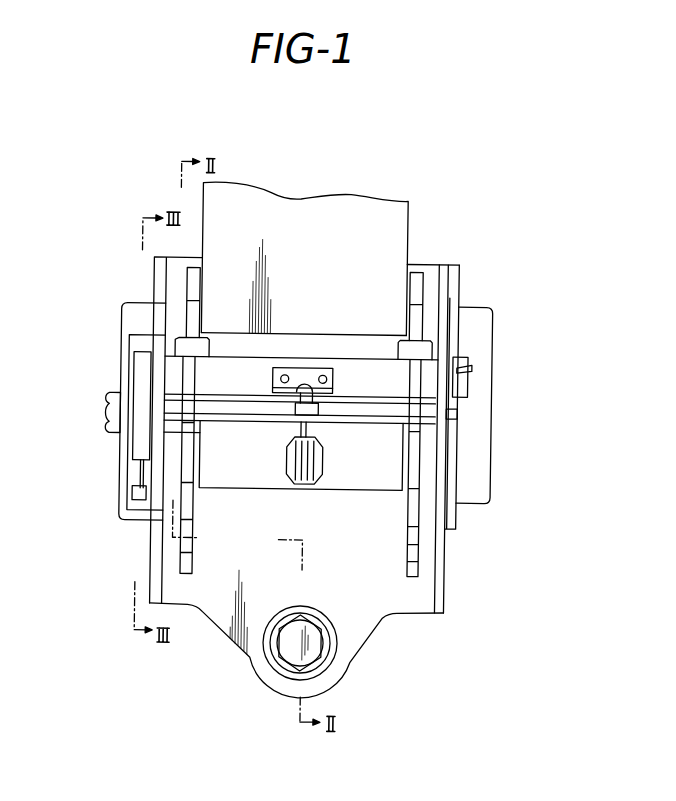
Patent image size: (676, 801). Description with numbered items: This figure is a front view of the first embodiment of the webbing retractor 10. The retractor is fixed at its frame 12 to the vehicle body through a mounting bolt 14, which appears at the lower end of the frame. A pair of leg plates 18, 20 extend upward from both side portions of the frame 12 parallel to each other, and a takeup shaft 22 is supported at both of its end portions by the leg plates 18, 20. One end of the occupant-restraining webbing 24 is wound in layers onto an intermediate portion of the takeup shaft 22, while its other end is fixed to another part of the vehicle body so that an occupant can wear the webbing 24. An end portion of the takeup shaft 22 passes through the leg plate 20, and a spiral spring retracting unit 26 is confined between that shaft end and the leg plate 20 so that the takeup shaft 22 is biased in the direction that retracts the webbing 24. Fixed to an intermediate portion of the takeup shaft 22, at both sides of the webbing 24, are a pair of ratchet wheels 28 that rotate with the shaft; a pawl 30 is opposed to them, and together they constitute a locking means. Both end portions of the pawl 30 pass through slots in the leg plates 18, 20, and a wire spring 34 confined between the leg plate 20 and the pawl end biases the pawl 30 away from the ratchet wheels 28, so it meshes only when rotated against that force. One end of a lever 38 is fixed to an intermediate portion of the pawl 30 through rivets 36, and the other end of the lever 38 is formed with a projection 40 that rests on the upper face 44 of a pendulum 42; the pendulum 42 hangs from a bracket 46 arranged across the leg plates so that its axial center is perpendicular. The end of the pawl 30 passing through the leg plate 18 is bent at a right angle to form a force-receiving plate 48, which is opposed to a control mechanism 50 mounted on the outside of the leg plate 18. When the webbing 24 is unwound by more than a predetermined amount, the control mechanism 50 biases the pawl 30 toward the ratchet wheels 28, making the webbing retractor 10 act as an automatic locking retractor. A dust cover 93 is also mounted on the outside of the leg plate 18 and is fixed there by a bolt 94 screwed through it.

The webbing retractor 10 is at (462, 261).
The frame 12 is at (351, 644).
The mounting bolt 14 is at (316, 628).
The leg plate 18 is at (155, 565).
The leg plate 20 is at (448, 485).
The takeup shaft 22 is at (430, 438).
The occupant-restraining webbing 24 is at (397, 219).
The spiral spring retracting unit 26 is at (488, 364).
The ratchet wheels 28 is at (198, 274).
The pawl 30 is at (342, 364).
The wire spring 34 is at (461, 350).
The rivets 36 is at (279, 378).
The lever 38 is at (294, 372).
The projection 40 is at (315, 407).
The pendulum 42 is at (285, 463).
The upper face 44 is at (294, 405).
The bracket 46 is at (218, 421).
The force-receiving plate 48 is at (136, 365).
The control mechanism 50 is at (103, 388).
The dust cover 93 is at (133, 309).
The bolt 94 is at (108, 412).